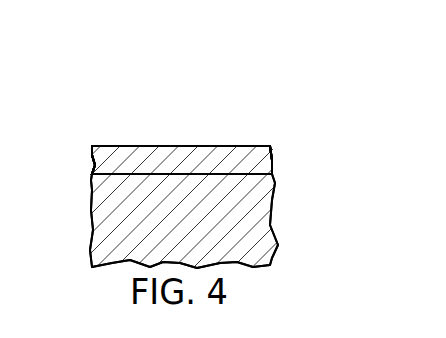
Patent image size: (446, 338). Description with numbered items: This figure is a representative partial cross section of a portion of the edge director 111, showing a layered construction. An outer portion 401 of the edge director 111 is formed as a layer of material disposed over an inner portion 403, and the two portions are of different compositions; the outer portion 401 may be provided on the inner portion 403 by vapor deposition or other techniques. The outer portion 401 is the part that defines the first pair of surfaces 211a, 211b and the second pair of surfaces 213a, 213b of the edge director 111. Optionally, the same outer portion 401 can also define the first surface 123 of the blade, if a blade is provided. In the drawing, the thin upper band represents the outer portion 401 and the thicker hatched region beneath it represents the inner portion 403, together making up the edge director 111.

The edge director 111 is at (160, 186).
The outer portion 401 is at (228, 152).
The inner portion 403 is at (265, 207).
The first pair of surfaces 211a is at (182, 95).
The first pair of surfaces 211b is at (182, 95).
The second pair of surfaces 213a is at (184, 95).
The second pair of surfaces 213b is at (182, 111).
The first surface 123 is at (182, 111).